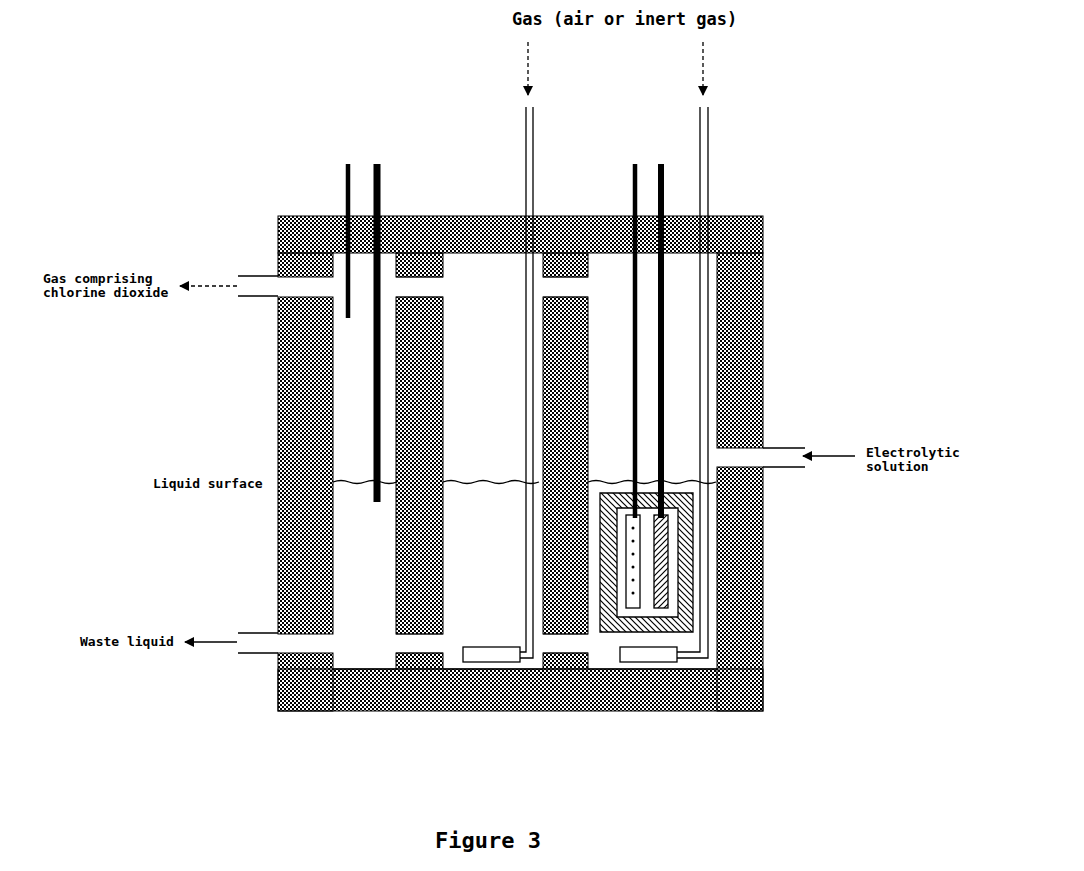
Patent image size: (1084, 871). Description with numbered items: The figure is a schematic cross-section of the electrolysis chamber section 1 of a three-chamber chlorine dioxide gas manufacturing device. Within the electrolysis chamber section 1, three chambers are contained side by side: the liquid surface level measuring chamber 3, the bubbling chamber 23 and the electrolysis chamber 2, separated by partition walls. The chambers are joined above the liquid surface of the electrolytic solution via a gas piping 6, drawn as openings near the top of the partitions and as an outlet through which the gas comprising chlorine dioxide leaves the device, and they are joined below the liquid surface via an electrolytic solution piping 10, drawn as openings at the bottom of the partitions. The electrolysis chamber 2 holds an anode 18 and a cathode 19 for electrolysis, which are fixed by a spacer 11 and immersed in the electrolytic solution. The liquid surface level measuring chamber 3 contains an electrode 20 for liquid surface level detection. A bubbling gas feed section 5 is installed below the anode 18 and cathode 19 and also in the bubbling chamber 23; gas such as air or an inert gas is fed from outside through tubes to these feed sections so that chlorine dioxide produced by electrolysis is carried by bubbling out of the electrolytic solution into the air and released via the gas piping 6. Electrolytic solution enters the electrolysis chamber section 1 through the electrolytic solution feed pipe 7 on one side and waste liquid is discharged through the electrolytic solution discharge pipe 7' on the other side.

The electrolysis chamber section 1 is at (737, 692).
The electrolysis chamber 2 is at (602, 647).
The liquid surface level measuring chamber 3 is at (363, 650).
The bubbling gas feed section 5 is at (493, 655).
The gas piping 6 is at (257, 287).
The electrolytic solution feed pipe 7 is at (784, 409).
The electrolytic solution discharge pipe 7' is at (255, 599).
The electrolytic solution piping 10 is at (416, 645).
The spacer 11 is at (693, 596).
The anode 18 is at (618, 386).
The cathode 19 is at (677, 386).
The electrode 20 is at (362, 350).
The bubbling chamber 23 is at (455, 628).